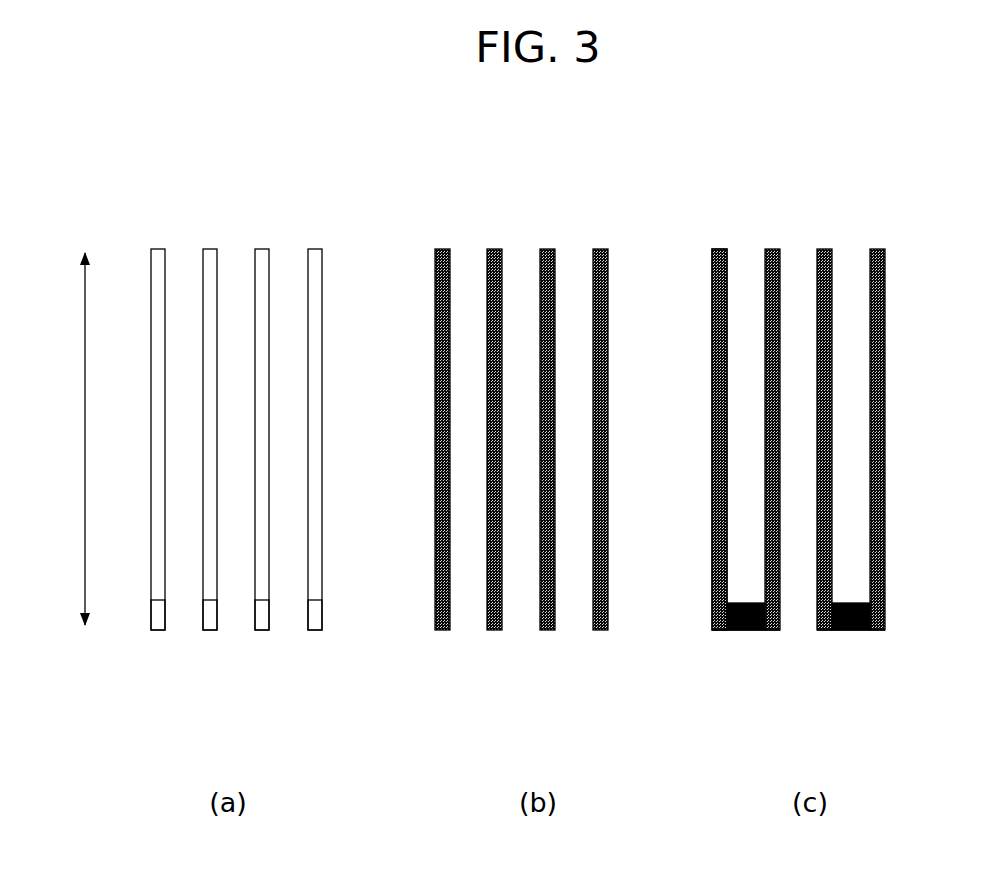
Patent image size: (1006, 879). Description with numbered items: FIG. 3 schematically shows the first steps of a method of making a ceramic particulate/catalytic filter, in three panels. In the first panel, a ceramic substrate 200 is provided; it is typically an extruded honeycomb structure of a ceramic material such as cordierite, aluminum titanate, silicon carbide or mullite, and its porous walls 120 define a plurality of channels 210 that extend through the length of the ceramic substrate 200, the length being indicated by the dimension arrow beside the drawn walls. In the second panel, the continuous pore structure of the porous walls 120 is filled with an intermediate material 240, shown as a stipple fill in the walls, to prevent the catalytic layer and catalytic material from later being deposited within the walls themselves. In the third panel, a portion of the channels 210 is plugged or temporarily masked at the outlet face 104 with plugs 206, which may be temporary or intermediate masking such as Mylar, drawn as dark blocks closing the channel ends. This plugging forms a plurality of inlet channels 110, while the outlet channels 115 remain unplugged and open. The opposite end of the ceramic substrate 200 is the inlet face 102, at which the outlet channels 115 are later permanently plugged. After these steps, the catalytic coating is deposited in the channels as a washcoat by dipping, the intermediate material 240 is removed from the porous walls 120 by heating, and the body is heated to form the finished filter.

The ceramic substrate 200 is at (212, 184).
The channels 210 is at (573, 238).
The porous walls 120 is at (313, 638).
The intermediate material 240 is at (598, 602).
The inlet face 102 is at (707, 418).
The inlet channels 110 is at (750, 250).
The outlet channels 115 is at (798, 602).
The outlet face 104 is at (820, 662).
The plugs 206 is at (737, 642).